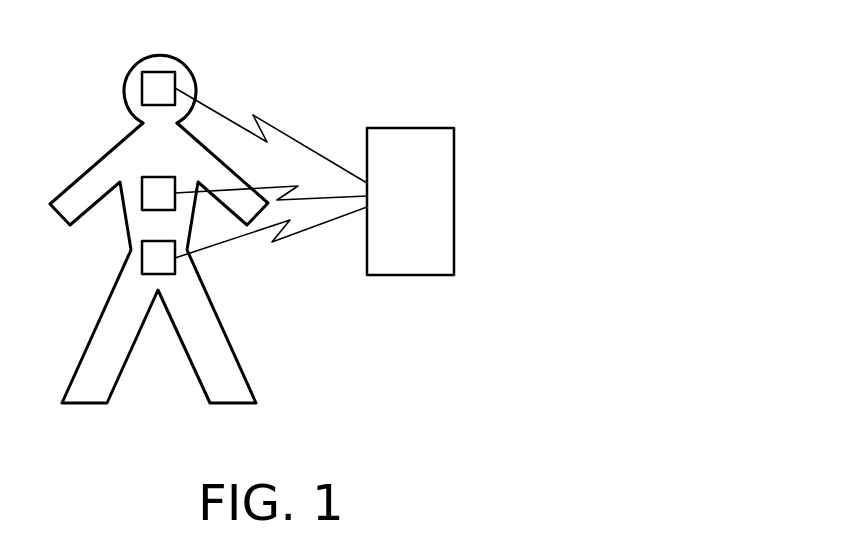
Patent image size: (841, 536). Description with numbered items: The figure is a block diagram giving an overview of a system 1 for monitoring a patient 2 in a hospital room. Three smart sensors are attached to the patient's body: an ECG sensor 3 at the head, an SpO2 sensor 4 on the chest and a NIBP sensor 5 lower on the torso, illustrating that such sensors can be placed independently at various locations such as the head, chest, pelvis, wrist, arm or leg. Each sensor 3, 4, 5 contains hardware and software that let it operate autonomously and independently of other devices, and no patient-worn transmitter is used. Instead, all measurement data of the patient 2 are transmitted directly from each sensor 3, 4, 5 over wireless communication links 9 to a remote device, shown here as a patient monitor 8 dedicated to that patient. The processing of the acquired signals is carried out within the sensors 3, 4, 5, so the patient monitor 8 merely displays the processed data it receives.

The system 1 is at (362, 58).
The patient 2 is at (87, 185).
The ECG sensor 3 is at (142, 90).
The SpO2 sensor 4 is at (142, 192).
The NIBP sensor 5 is at (142, 258).
The patient monitor 8 is at (454, 202).
The wireless communication links 9 is at (318, 192).